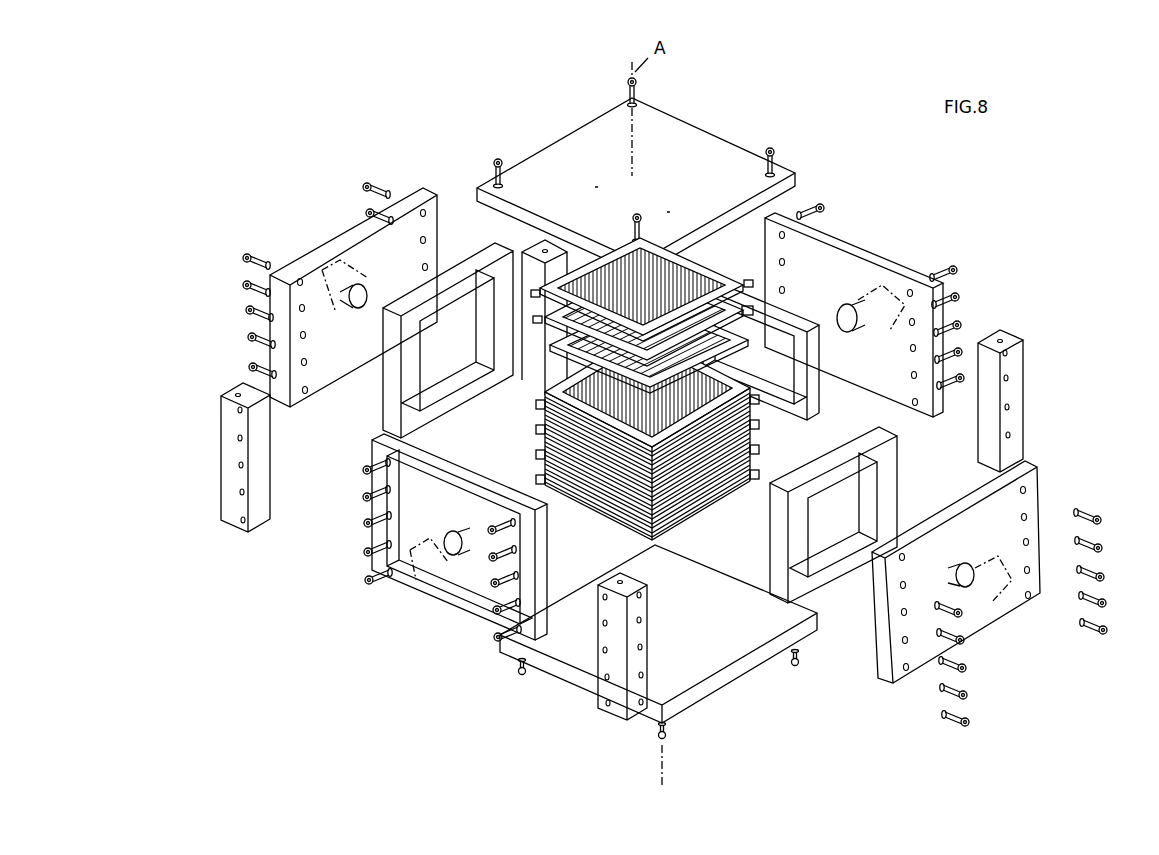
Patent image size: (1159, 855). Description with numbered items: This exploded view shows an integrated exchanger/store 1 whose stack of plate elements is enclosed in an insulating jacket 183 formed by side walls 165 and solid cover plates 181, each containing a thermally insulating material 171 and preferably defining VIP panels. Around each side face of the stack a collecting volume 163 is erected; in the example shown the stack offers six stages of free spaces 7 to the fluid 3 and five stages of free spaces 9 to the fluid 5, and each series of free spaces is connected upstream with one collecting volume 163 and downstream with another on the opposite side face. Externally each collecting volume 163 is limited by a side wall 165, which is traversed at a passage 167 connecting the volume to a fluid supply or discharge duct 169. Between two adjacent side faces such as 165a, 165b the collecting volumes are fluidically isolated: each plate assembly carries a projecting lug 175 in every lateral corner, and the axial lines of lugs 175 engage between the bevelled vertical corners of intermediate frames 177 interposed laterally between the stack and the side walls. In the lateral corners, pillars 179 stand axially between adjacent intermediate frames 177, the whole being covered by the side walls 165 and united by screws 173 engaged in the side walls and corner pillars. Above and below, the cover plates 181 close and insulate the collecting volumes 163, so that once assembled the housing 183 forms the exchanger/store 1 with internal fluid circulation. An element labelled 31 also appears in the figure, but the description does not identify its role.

The integrated exchanger/store 1 is at (732, 512).
The fluid 3 is at (347, 290).
The fluid 5 is at (885, 302).
The free spaces 7 is at (755, 402).
The free spaces 9 is at (548, 423).
The frame with corrugated insert 31 is at (738, 368).
The collecting volume 163 is at (641, 437).
The side wall 165 is at (290, 272).
The side face 165a is at (1022, 476).
The side face 165b is at (856, 315).
The passage 167 is at (848, 303).
The fluid supply or discharge duct 169 is at (882, 288).
The thermally insulating material 171 is at (717, 147).
The screws 173 is at (502, 160).
The projecting lug 175 is at (540, 294).
The intermediate frame 177 is at (795, 312).
The corner pillar 179 is at (543, 246).
The cover plate 181 is at (588, 136).
The insulating jacket 183 is at (477, 152).